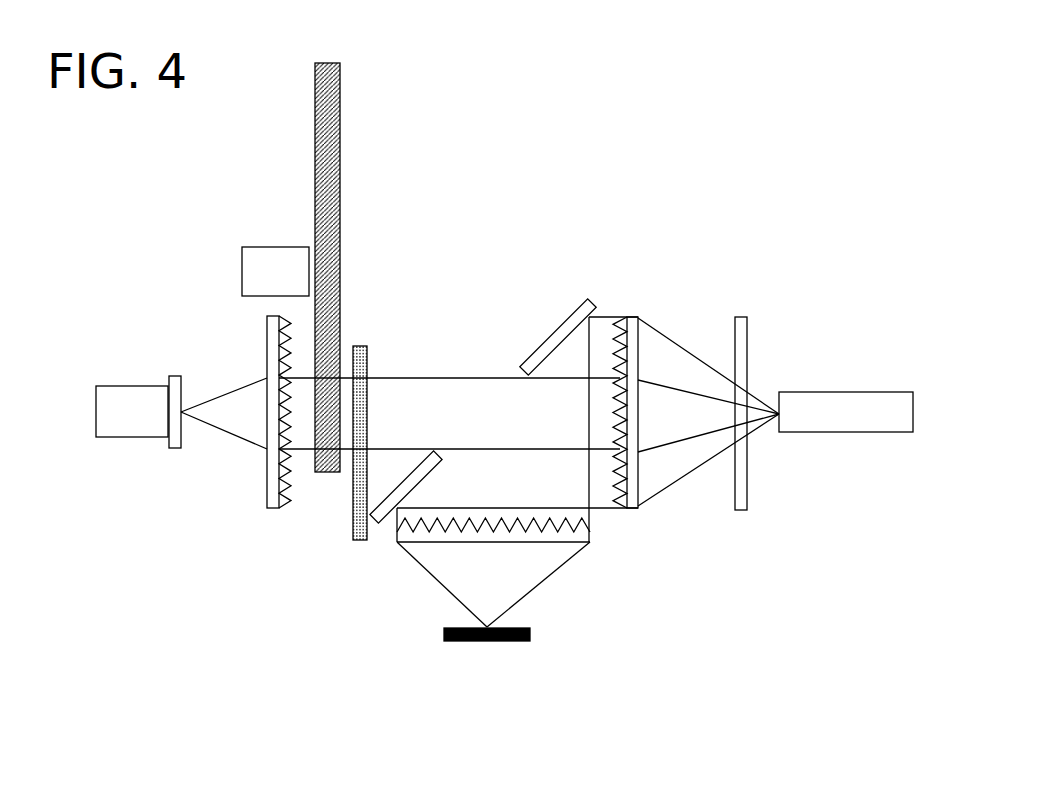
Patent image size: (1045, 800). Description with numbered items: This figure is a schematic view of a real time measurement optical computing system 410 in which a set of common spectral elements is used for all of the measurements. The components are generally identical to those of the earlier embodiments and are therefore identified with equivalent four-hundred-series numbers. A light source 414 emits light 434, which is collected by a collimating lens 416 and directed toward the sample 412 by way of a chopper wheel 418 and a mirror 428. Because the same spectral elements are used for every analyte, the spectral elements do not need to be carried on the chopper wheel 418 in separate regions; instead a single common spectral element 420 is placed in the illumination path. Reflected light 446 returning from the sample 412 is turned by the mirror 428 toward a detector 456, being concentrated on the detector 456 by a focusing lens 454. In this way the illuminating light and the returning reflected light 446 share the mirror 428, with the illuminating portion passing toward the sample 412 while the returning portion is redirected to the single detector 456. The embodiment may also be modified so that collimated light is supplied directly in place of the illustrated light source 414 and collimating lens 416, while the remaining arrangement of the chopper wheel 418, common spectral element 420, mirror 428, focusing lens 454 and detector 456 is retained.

The optical computing system 410 is at (722, 168).
The sample 412 is at (830, 392).
The light source 414 is at (153, 437).
The collimating lens 416 is at (275, 508).
The chopper wheel 418 is at (340, 120).
The common spectral element 420 is at (360, 540).
The mirror 428 is at (560, 327).
The light 434 is at (228, 395).
The reflected light 446 is at (670, 357).
The focusing lens 454 is at (590, 535).
The detector 456 is at (530, 635).